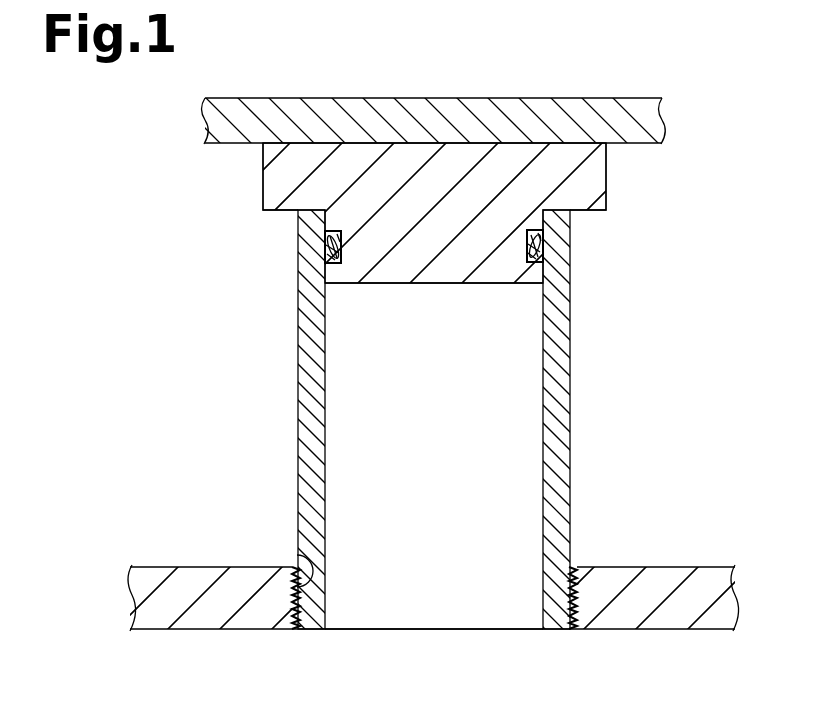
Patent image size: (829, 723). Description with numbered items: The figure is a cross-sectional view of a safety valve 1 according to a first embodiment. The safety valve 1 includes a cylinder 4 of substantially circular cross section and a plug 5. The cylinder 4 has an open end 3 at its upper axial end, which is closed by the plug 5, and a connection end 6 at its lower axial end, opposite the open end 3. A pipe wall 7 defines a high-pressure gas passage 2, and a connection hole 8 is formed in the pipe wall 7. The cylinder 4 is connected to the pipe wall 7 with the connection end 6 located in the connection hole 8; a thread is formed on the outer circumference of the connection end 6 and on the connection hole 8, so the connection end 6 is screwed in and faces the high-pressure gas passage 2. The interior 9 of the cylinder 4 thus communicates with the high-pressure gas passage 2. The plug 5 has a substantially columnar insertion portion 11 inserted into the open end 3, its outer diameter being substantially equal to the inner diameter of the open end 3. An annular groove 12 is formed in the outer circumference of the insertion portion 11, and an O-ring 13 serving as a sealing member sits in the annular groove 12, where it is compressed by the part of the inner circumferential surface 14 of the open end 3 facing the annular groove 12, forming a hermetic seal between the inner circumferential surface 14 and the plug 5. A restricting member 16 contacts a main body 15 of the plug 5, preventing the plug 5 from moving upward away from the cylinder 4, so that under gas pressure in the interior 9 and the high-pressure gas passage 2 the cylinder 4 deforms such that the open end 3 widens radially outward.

The safety valve 1 is at (158, 168).
The high-pressure gas passage 2 is at (438, 678).
The open end 3 is at (560, 222).
The cylinder 4 is at (570, 325).
The plug 5 is at (263, 185).
The connection end 6 is at (503, 623).
The pipe wall 7 is at (708, 567).
The connection hole 8 is at (298, 565).
The interior 9 is at (445, 435).
The insertion portion 11 is at (438, 270).
The annular groove 12 is at (333, 235).
The O-ring 13 is at (324, 253).
The inner circumferential surface 14 is at (542, 263).
The main body 15 is at (592, 178).
The restricting member 16 is at (655, 115).